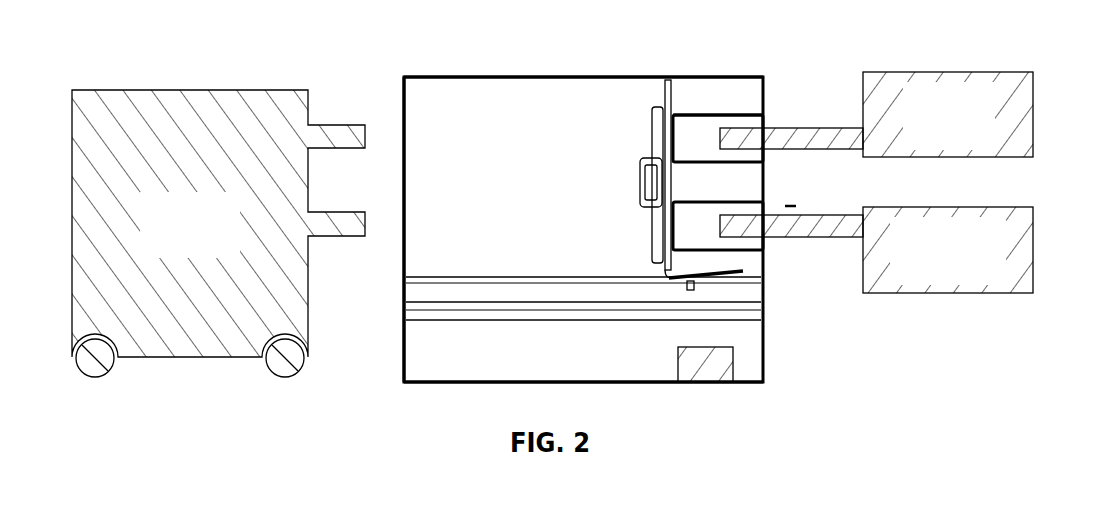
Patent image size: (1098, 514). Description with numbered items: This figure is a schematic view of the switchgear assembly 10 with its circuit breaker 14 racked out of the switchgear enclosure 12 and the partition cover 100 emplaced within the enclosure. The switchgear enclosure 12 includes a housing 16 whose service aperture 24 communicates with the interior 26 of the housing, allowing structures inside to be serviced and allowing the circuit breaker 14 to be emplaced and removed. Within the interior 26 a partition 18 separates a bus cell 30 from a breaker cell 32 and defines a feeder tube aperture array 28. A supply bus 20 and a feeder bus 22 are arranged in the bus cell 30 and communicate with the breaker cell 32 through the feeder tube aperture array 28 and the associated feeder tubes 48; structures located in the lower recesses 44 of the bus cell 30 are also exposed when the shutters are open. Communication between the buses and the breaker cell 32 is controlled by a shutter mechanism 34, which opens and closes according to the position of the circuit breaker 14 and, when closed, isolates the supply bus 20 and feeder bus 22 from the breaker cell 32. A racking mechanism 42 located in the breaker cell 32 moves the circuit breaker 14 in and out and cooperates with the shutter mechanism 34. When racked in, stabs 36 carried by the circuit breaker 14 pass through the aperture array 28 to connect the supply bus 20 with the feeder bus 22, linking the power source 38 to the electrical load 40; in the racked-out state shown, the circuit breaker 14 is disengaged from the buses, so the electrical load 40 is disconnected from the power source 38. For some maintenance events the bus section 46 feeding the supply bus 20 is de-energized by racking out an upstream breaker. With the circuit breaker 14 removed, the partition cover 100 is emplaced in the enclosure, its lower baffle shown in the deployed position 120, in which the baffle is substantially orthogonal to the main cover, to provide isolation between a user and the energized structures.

The switchgear assembly 10 is at (441, 398).
The switchgear enclosure 12 is at (633, 70).
The circuit breaker 14 is at (118, 84).
The housing 16 is at (440, 76).
The partition 18 is at (673, 86).
The supply bus 20 is at (826, 123).
The feeder bus 22 is at (828, 241).
The service aperture 24 is at (403, 361).
The interior 26 is at (625, 358).
The feeder tube aperture array 28 is at (656, 118).
The bus cell 30 is at (744, 107).
The breaker cell 32 is at (476, 125).
The shutter mechanism 34 is at (669, 130).
The stabs 36 is at (342, 122).
The power source 38 is at (955, 70).
The electrical load 40 is at (955, 295).
The racking mechanism 42 is at (522, 314).
The lower recesses 44 is at (723, 364).
The bus section 46 is at (761, 154).
The feeder tubes 48 is at (753, 111).
The partition cover 100 is at (687, 183).
The deployed position 120 is at (735, 279).